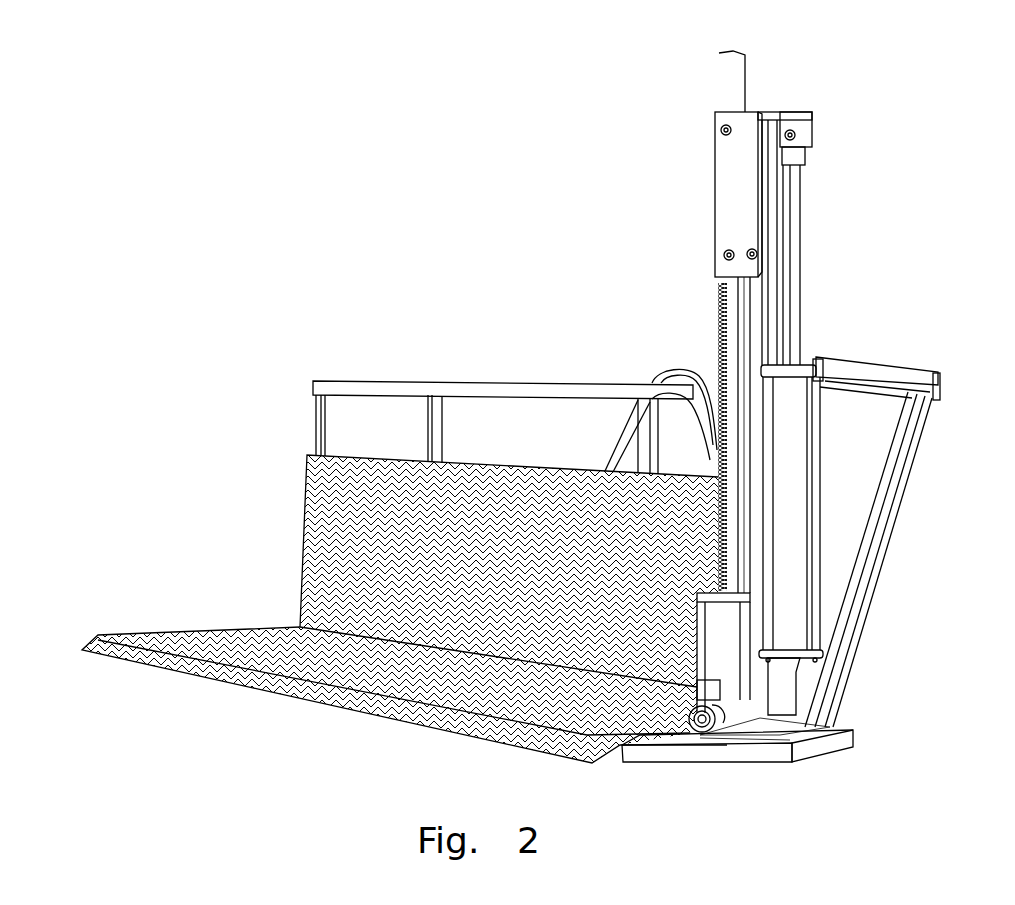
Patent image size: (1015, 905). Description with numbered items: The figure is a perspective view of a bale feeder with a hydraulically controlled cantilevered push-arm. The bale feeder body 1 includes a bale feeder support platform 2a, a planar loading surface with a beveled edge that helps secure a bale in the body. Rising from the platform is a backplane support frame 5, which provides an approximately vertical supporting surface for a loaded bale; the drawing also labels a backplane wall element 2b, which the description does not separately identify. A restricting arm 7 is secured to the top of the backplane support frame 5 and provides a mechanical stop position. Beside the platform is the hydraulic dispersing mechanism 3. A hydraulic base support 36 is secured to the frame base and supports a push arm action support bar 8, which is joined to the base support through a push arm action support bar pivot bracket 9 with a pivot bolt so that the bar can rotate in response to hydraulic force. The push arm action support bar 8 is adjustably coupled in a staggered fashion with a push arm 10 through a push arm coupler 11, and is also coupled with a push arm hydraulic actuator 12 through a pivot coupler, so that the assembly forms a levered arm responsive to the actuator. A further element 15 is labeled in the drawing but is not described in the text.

The bale feeder body 1 is at (253, 523).
The bale feeder support platform 2a is at (295, 650).
The wall 2b is at (376, 520).
The hydraulic dispersing mechanism 3 is at (837, 123).
The backplane support frame 5 is at (517, 385).
The restricting arm 7 is at (897, 373).
The push arm action support bar 8 is at (773, 340).
The push arm action support bar pivot bracket 9 is at (843, 723).
The push arm 10 is at (735, 340).
The push arm coupler 11 is at (729, 200).
The push arm hydraulic actuator 12 is at (793, 505).
The spiral cable 15 is at (730, 528).
The hydraulic base support 36 is at (737, 737).